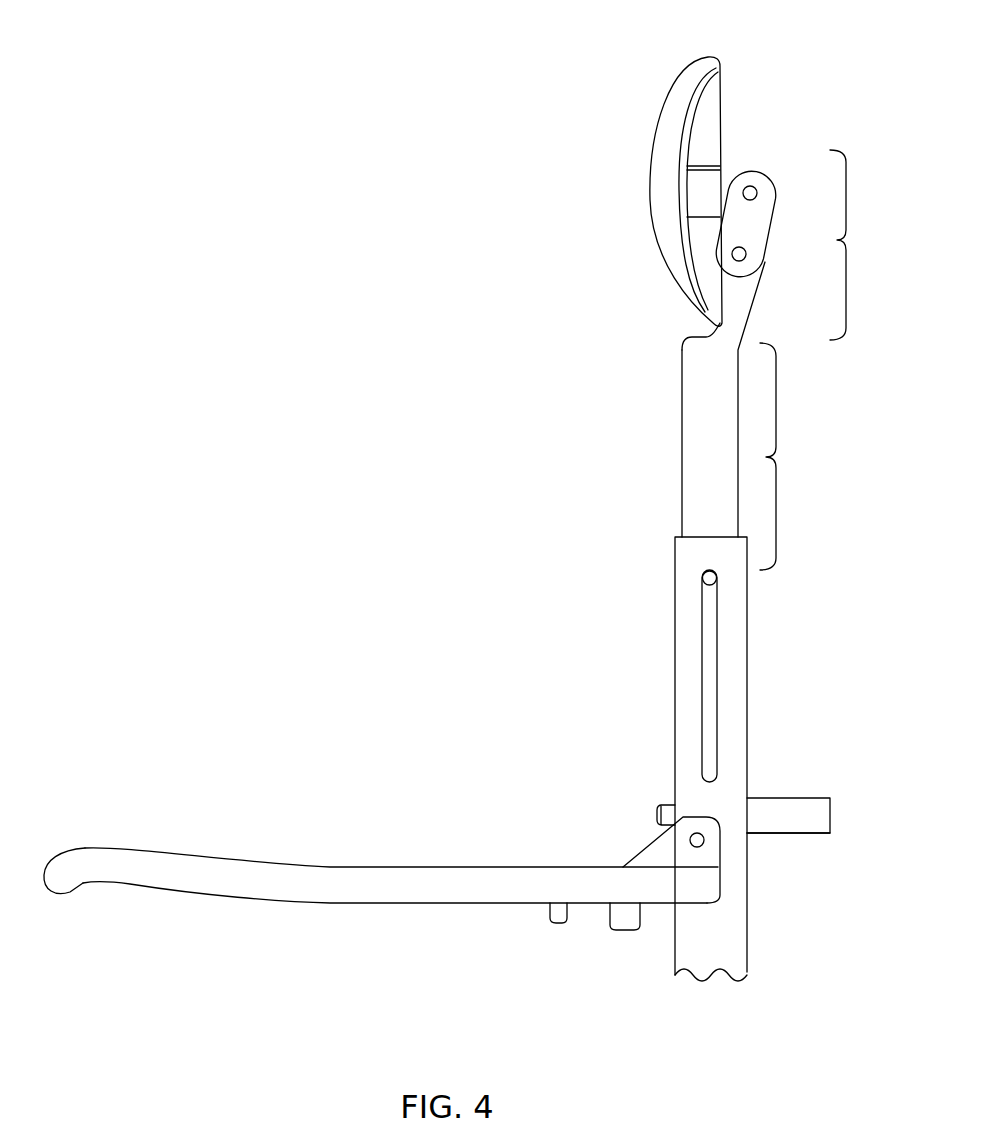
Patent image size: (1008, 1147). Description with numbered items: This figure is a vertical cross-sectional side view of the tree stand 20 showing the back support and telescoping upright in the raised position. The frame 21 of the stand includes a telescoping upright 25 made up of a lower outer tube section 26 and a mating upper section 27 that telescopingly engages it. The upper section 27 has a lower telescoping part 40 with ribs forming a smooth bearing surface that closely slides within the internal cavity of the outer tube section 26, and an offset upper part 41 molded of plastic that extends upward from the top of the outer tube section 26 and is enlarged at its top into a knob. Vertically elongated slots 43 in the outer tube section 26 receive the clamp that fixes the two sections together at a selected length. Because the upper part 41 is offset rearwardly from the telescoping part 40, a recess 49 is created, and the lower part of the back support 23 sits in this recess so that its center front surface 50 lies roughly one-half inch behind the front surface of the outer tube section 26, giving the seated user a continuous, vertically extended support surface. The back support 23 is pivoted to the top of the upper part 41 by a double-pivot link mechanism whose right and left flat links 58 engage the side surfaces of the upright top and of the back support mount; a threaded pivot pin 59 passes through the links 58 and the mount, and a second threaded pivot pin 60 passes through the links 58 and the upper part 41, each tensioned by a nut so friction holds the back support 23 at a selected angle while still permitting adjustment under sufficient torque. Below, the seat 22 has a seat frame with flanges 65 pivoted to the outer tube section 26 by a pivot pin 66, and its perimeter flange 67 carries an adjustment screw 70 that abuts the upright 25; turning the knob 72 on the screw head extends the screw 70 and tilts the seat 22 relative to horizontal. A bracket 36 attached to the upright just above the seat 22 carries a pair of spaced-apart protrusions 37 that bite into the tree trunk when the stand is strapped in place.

The tree stand 20 is at (458, 593).
The frame 21 is at (753, 892).
The seat 22 is at (85, 847).
The back support 23 is at (689, 264).
The telescoping upright 25 is at (737, 952).
The outer tube section 26 is at (673, 738).
The upper section 27 is at (680, 438).
The bracket 36 is at (807, 798).
The protrusions 37 is at (823, 827).
The telescoping part 40 is at (767, 457).
The offset upper part 41 is at (855, 245).
The slots 43 is at (710, 675).
The recess 49 is at (712, 336).
The center front surface 50 is at (673, 203).
The flat links 58 is at (772, 219).
The pivot pin 59 is at (745, 259).
The pivot pin 60 is at (756, 189).
The flanges 65 is at (650, 855).
The pivot pin 66 is at (692, 834).
The perimeter flange 67 is at (381, 839).
The adjustment screw 70 is at (602, 938).
The knob 72 is at (555, 923).